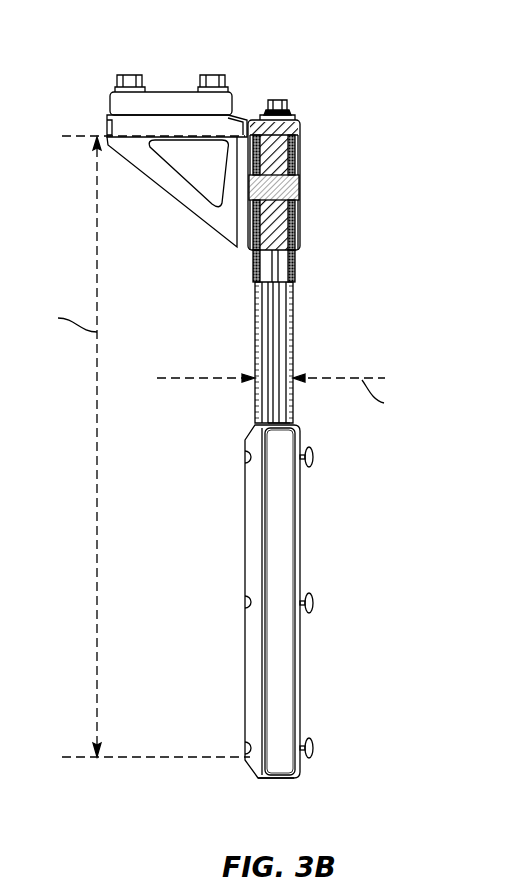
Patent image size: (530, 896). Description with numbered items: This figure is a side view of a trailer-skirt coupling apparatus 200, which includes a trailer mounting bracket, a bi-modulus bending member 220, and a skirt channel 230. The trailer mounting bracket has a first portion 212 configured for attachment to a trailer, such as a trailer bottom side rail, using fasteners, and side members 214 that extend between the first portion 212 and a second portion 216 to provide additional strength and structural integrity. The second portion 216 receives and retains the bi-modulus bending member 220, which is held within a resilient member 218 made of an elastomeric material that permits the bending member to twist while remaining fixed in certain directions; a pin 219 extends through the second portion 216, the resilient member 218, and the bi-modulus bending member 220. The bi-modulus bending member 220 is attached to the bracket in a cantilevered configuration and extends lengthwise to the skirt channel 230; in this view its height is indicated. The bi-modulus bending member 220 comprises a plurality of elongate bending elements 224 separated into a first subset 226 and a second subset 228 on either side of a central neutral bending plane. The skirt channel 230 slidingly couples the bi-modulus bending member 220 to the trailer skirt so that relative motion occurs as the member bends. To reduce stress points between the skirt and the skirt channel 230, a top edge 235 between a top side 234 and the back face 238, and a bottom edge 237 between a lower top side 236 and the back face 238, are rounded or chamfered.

The trailer-skirt coupling apparatus 200 is at (326, 52).
The first portion 212 is at (170, 120).
The side members 214 is at (176, 188).
The second portion 216 is at (300, 137).
The resilient member 218 is at (292, 237).
The pin 219 is at (300, 186).
The bi-modulus bending member 220 is at (303, 352).
The elongate bending elements 224 is at (258, 336).
The first subset 226 is at (256, 302).
The second subset 228 is at (292, 300).
The skirt channel 230 is at (243, 692).
The top side 234 is at (285, 426).
The top edge 235 is at (298, 425).
The top side 236 is at (280, 780).
The bottom edge 237 is at (303, 780).
The back face 238 is at (300, 690).